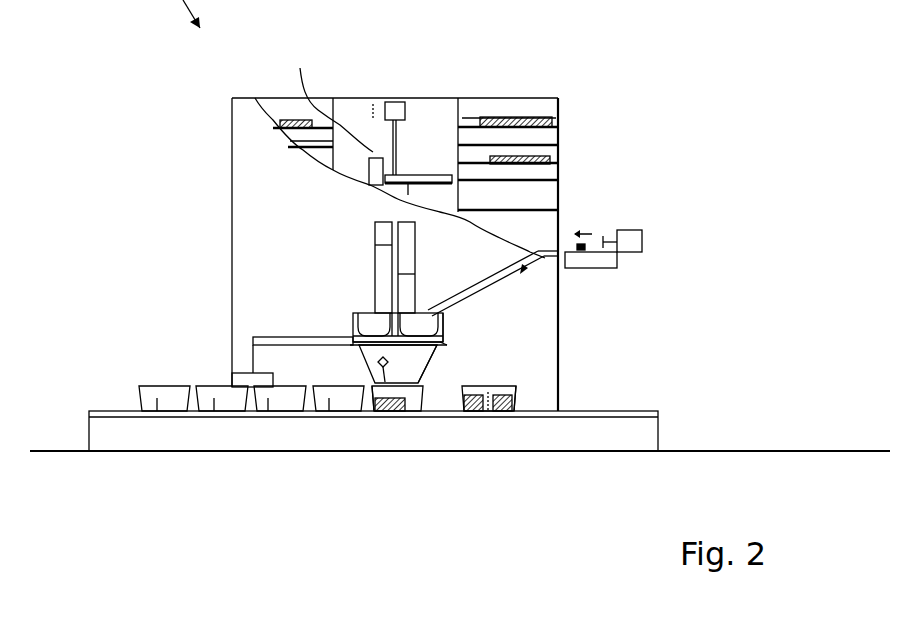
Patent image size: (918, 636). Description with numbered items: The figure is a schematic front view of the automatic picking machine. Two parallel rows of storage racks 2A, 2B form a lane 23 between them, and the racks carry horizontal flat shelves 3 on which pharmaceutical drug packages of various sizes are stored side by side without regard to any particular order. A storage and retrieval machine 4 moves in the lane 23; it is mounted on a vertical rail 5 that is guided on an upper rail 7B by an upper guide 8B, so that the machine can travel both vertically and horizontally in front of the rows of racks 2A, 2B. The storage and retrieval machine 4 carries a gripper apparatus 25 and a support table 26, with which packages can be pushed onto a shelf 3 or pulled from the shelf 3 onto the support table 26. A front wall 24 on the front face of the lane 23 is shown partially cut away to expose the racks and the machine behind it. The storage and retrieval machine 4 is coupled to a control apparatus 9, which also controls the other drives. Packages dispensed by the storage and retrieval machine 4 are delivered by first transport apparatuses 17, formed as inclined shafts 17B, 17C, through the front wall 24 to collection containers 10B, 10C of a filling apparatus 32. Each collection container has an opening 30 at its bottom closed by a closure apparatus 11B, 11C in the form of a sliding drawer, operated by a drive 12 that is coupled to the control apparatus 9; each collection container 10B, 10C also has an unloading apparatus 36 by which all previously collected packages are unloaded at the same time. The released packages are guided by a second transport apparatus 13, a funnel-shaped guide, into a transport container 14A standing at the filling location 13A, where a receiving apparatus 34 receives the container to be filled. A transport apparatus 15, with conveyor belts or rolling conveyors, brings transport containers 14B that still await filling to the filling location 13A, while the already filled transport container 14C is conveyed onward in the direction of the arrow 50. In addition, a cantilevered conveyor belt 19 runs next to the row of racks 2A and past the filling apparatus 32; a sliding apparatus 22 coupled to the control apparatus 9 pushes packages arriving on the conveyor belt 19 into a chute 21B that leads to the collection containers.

The row of storage racks 2A is at (527, 98).
The row of storage racks 2B is at (275, 102).
The horizontal flat shelves 3 is at (560, 126).
The storage and retrieval machine 4 is at (331, 99).
The vertical rail 5 is at (415, 174).
The upper rail 7B is at (395, 100).
The upper guide 8B is at (383, 125).
The control apparatus 9 is at (220, 379).
The collection container 10B is at (357, 318).
The collection container 10C is at (440, 318).
The closure apparatus 11B is at (353, 334).
The closure apparatus 11C is at (448, 343).
The drive 12 is at (253, 337).
The second transport apparatus 13 is at (425, 372).
The filling location 13A is at (386, 436).
The transport container 14A is at (412, 412).
The transport containers 14B is at (158, 412).
The transport container 14C is at (490, 412).
The transport apparatus 15 is at (565, 436).
The first transport apparatuses 17 is at (352, 218).
The inclined shaft 17B is at (373, 245).
The inclined shaft 17C is at (398, 275).
The cantilevered conveyor belt 19 is at (617, 259).
The chute 21B is at (538, 256).
The sliding apparatus 22 is at (642, 240).
The lane 23 is at (373, 118).
The front wall 24 is at (240, 153).
The gripper apparatus 25 is at (433, 174).
The support table 26 is at (462, 126).
The opening 30 is at (376, 332).
The filling apparatus 32 is at (326, 362).
The receiving apparatus 34 is at (368, 418).
The unloading apparatus 36 is at (448, 346).
The arrow 50 is at (527, 399).